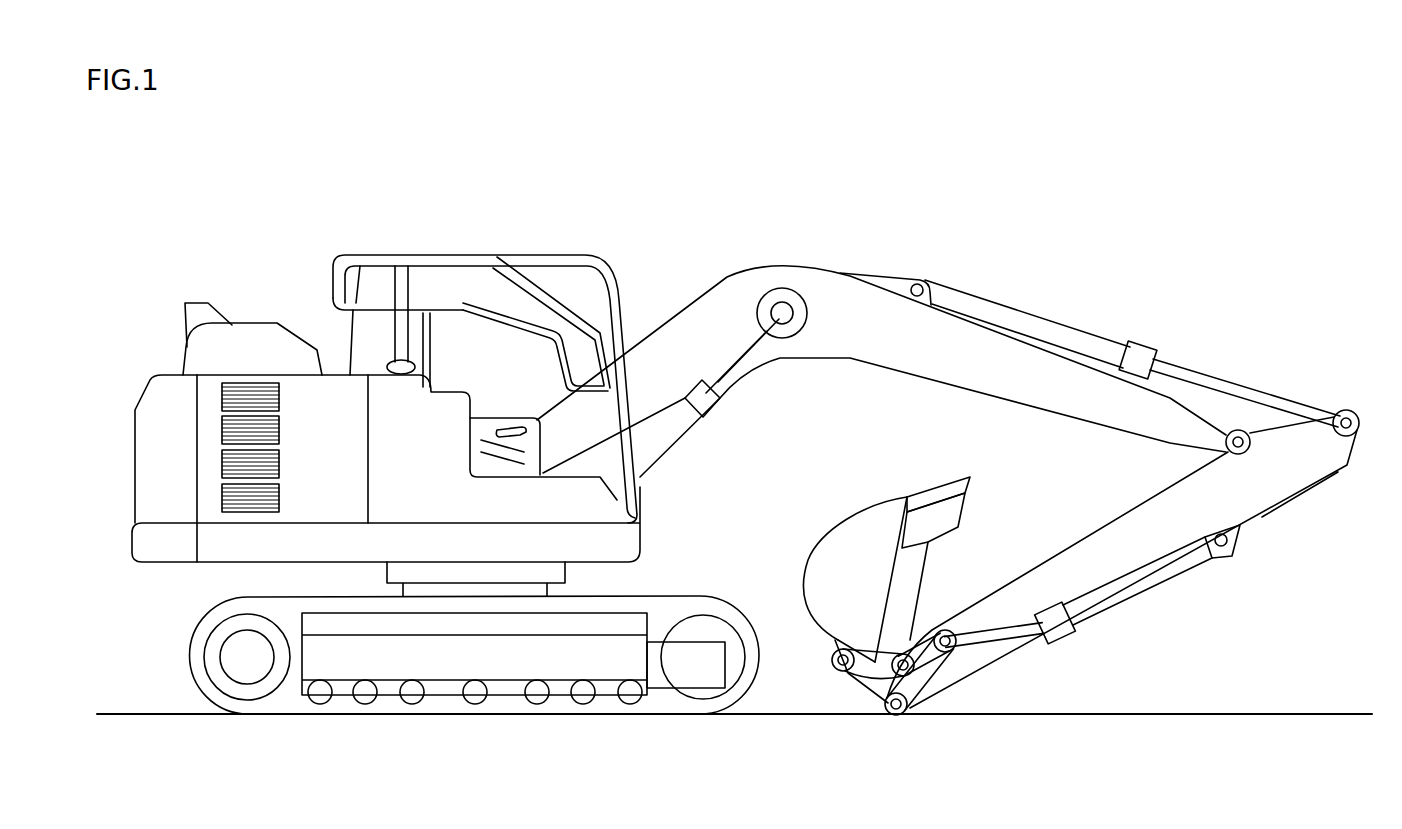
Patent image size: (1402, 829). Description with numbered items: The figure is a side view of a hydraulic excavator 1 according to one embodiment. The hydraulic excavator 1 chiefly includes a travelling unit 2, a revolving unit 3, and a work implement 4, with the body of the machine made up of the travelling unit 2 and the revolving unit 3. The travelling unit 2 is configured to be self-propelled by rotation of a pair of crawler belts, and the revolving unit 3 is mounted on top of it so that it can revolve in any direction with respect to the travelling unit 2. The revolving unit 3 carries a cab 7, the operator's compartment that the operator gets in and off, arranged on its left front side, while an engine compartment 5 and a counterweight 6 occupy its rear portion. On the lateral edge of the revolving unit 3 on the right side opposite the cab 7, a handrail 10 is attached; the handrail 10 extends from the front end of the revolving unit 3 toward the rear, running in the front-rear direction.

The hydraulic excavator 1 is at (689, 206).
The travelling unit 2 is at (190, 657).
The revolving unit 3 is at (302, 295).
The work implement 4 is at (1003, 368).
The engine compartment 5 is at (250, 322).
The counterweight 6 is at (158, 475).
The cab 7 is at (582, 292).
The handrail 10 is at (546, 284).